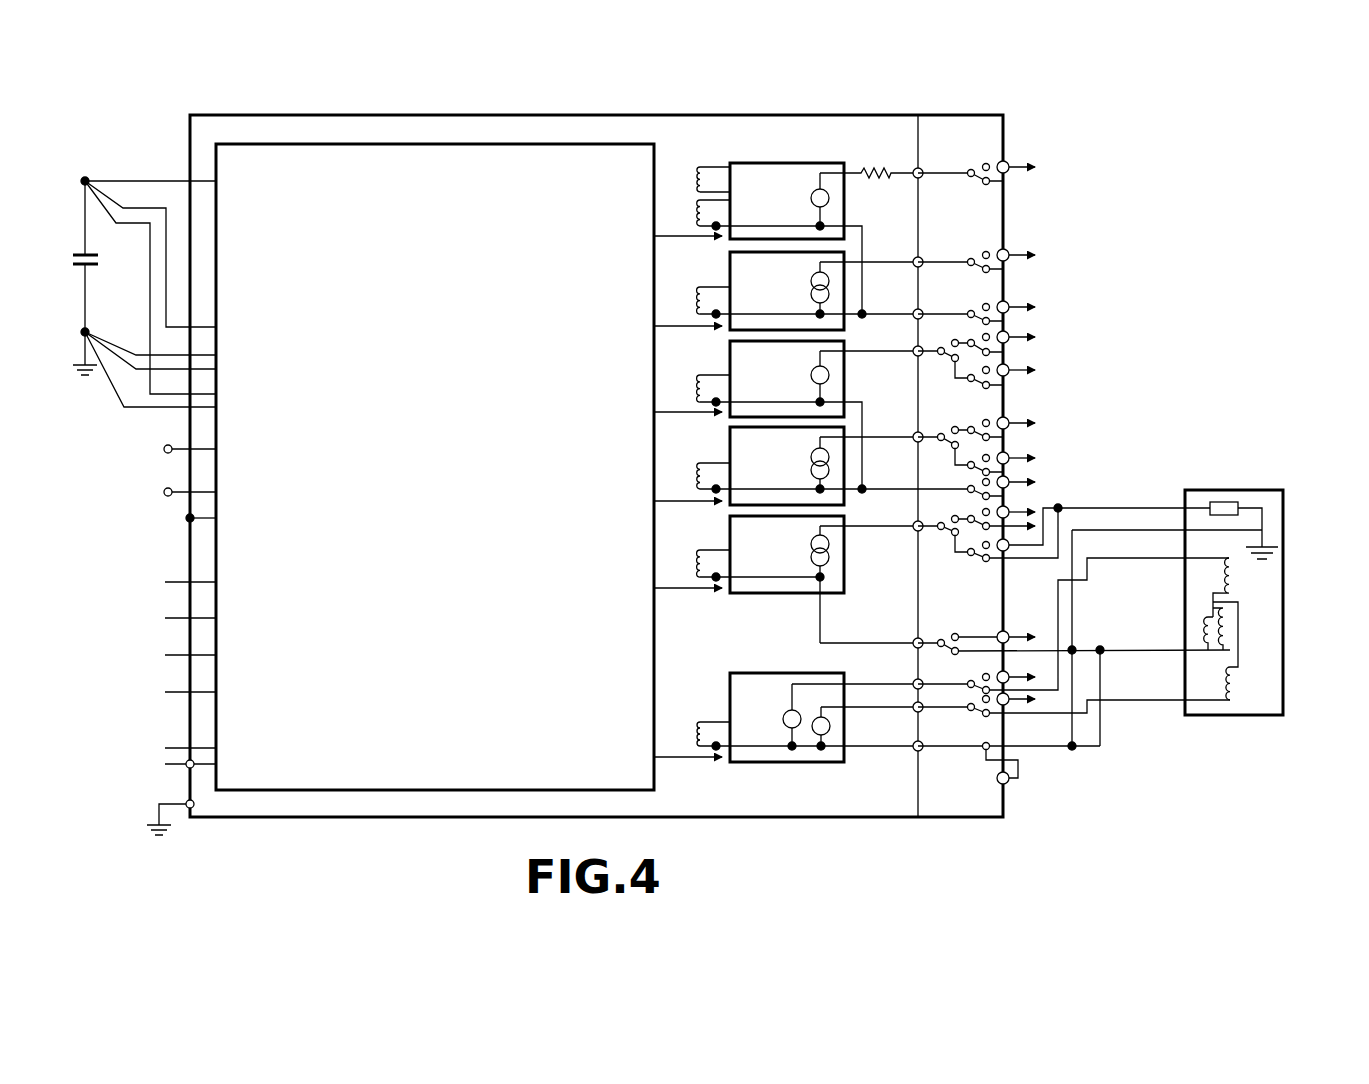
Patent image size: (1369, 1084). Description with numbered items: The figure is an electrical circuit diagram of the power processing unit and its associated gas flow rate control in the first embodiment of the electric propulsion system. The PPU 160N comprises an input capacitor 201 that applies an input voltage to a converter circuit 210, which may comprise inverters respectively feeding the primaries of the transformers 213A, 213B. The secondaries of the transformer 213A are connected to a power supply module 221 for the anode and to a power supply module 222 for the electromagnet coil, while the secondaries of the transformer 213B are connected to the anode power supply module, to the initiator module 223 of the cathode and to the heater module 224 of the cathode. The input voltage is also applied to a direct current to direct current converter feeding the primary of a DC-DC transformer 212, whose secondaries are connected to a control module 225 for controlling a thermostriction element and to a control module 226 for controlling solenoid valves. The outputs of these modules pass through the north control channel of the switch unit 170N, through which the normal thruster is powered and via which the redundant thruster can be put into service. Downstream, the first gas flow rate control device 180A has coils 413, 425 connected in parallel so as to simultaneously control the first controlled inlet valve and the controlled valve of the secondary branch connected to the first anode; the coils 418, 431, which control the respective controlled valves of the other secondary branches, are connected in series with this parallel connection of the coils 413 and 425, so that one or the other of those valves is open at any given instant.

The PPU 160N is at (248, 822).
The switch unit 170N is at (995, 828).
The first gas flow rate control device 180A is at (1230, 641).
The input capacitor 201 is at (73, 277).
The converter circuit 210 is at (447, 450).
The DC-DC transformer 212 is at (700, 553).
The transformer 213A is at (703, 208).
The transformer 213B is at (703, 180).
The power supply module 221 is at (838, 212).
The power supply module 222 is at (838, 290).
The initiator module 223 is at (838, 390).
The heater module 224 is at (838, 462).
The control module 225 is at (838, 567).
The control module 226 is at (809, 697).
The coil 413 is at (1205, 628).
The coil 418 is at (1222, 578).
The coil 425 is at (1225, 622).
The coil 431 is at (1235, 683).